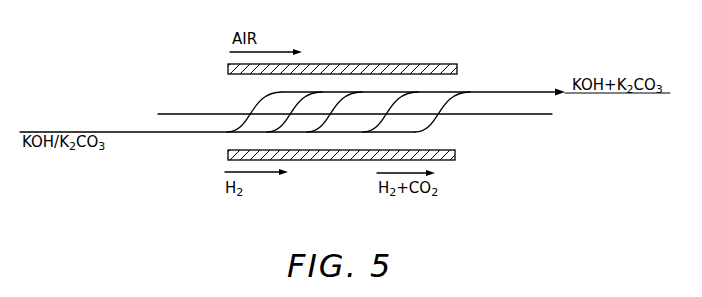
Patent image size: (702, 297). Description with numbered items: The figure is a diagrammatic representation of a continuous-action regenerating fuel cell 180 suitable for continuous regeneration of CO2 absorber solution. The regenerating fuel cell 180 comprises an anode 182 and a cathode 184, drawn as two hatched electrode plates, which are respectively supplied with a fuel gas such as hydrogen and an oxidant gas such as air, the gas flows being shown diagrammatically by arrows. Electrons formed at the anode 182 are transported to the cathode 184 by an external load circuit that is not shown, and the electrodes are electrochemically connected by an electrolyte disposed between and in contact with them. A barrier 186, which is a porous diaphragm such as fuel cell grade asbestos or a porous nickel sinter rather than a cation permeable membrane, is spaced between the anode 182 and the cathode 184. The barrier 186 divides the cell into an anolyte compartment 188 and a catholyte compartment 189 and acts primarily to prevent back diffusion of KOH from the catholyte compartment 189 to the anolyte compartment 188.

The regenerating fuel cell 180 is at (197, 70).
The anode 182 is at (335, 160).
The cathode 184 is at (338, 64).
The barrier 186 is at (186, 113).
The anolyte compartment 188 is at (469, 140).
The catholyte compartment 189 is at (468, 82).